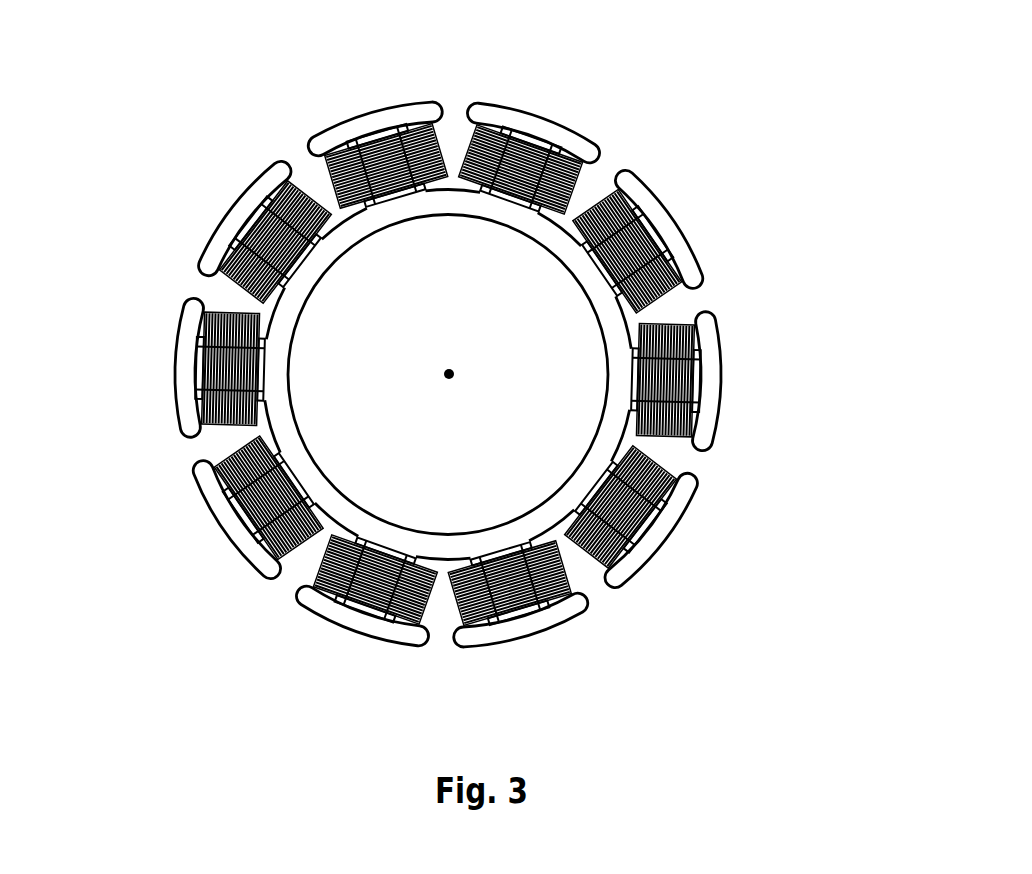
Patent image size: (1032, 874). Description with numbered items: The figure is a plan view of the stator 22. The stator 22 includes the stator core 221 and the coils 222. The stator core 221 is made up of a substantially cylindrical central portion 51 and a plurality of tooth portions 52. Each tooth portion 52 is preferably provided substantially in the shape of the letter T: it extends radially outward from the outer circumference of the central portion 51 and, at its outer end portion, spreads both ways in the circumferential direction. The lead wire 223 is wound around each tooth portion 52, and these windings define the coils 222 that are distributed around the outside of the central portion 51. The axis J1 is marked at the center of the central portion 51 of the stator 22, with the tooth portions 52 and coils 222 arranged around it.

The stator 22 is at (227, 100).
The stator core 221 is at (802, 313).
The central portion 51 is at (623, 316).
The tooth portion 52 is at (497, 117).
The coils 222 is at (560, 148).
The lead wire 223 is at (522, 140).
The central axis J1 is at (449, 374).